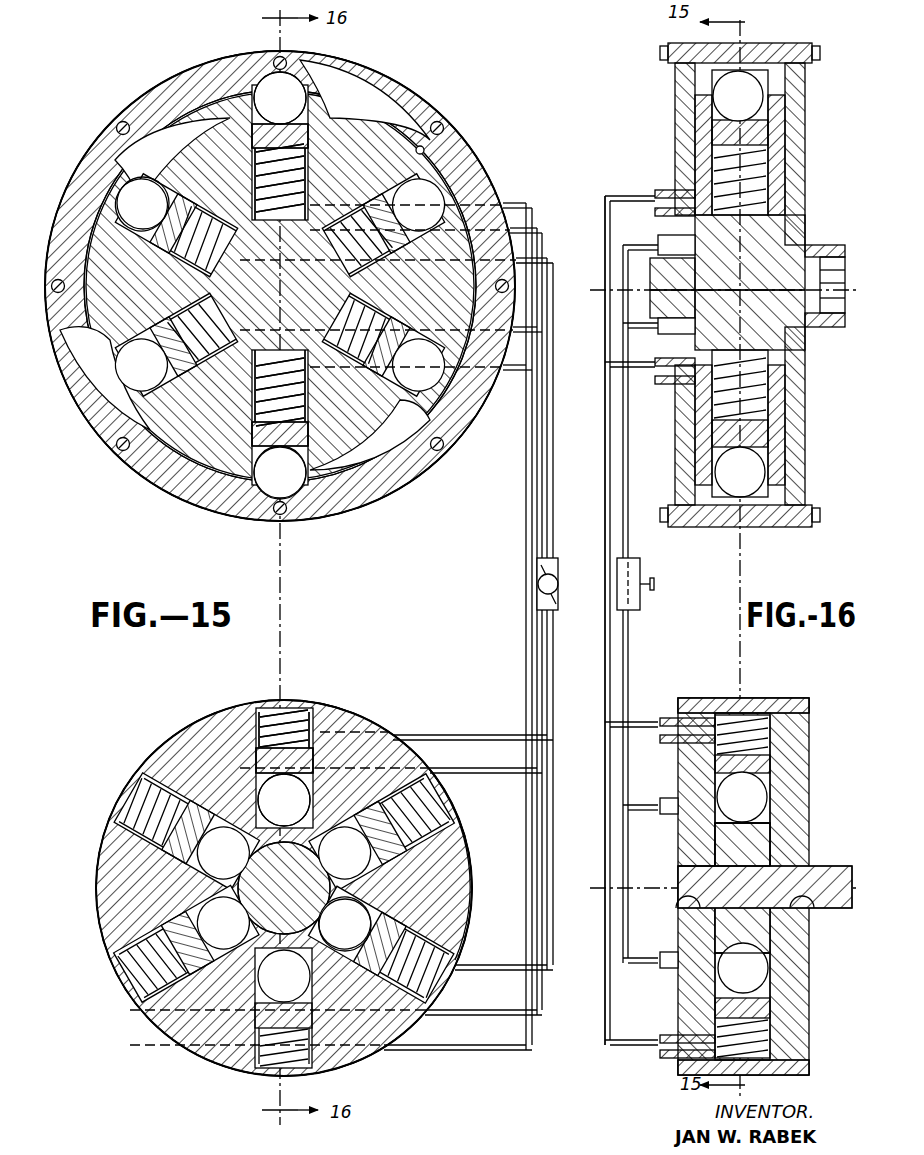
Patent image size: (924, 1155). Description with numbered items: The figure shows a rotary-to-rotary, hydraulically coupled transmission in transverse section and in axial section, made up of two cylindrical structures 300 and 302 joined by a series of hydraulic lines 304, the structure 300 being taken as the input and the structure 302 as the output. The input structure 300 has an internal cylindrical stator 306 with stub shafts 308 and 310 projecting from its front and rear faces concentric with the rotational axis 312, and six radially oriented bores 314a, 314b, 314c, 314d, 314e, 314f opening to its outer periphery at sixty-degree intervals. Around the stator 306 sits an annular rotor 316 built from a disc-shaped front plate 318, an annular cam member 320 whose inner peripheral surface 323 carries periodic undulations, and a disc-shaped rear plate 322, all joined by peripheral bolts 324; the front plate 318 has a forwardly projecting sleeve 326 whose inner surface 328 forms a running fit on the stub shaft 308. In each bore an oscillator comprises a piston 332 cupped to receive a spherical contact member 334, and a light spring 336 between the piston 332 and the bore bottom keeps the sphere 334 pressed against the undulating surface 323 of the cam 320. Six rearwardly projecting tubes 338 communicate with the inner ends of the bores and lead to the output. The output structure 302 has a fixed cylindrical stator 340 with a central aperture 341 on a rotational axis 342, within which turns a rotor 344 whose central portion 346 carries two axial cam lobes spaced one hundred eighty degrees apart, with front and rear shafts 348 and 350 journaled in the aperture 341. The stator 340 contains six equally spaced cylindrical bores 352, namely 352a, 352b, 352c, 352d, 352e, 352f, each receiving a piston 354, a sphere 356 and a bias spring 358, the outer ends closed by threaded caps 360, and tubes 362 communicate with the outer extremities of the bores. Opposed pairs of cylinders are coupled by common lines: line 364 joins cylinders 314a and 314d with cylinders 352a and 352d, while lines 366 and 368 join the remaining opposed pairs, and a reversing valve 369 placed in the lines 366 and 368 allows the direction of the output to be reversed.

In FIG. 15, the cylindrical structure 300 is at (275, 295).
In FIG. 16, the cylindrical structure 300 is at (706, 281).
In FIG. 15, the cylindrical structure 302 is at (290, 881).
In FIG. 16, the cylindrical structure 302 is at (745, 879).
In FIG. 15, the hydraulic lines 304 is at (491, 626).
In FIG. 16, the hydraulic lines 304 is at (642, 620).
In FIG. 15, the stator 306 is at (395, 118).
In FIG. 16, the stator 306 is at (770, 242).
In FIG. 16, the stub shaft 308 is at (800, 268).
In FIG. 16, the stub shaft 310 is at (660, 297).
In FIG. 16, the rotational axis 312 is at (606, 290).
In FIG. 15, the bore 314a is at (320, 64).
In FIG. 16, the bore 314a is at (762, 182).
In FIG. 15, the bore 314b is at (432, 186).
In FIG. 15, the bore 314c is at (446, 440).
In FIG. 15, the bore 314d is at (388, 480).
In FIG. 16, the bore 314d is at (780, 382).
In FIG. 15, the bore 314e is at (188, 496).
In FIG. 15, the bore 314f is at (100, 232).
In FIG. 15, the annular rotor 316 is at (472, 152).
In FIG. 16, the annular rotor 316 is at (676, 87).
In FIG. 16, the front plate 318 is at (805, 134).
In FIG. 15, the cam member 320 is at (385, 90).
In FIG. 16, the cam member 320 is at (762, 45).
In FIG. 16, the rear plate 322 is at (682, 114).
In FIG. 15, the inner peripheral surface 323 is at (428, 146).
In FIG. 15, the bolts 324 is at (442, 452).
In FIG. 16, the bolts 324 is at (668, 48).
In FIG. 16, the sleeve 326 is at (840, 310).
In FIG. 16, the inner surface 328 is at (842, 328).
In FIG. 15, the piston 332 is at (252, 136).
In FIG. 16, the piston 332 is at (722, 134).
In FIG. 15, the spherical contact member 334 is at (132, 192).
In FIG. 16, the spherical contact member 334 is at (754, 96).
In FIG. 15, the spring 336 is at (256, 152).
In FIG. 16, the spring 336 is at (722, 172).
In FIG. 16, the tubes 338 is at (665, 208).
In FIG. 15, the stator 340 is at (340, 722).
In FIG. 16, the stator 340 is at (809, 746).
In FIG. 16, the central aperture 341 is at (686, 900).
In FIG. 16, the rotational axis 342 is at (605, 904).
In FIG. 15, the rotor 344 is at (324, 882).
In FIG. 16, the rotor 344 is at (736, 878).
In FIG. 16, the central portion 346 is at (770, 842).
In FIG. 16, the front shaft 348 is at (822, 870).
In FIG. 16, the rear shaft 350 is at (684, 866).
In FIG. 15, the cylindrical bores 352 is at (130, 806).
In FIG. 15, the bore 352a is at (296, 714).
In FIG. 16, the bore 352a is at (722, 746).
In FIG. 15, the bore 352b is at (440, 846).
In FIG. 15, the bore 352c is at (440, 950).
In FIG. 15, the bore 352d is at (310, 1075).
In FIG. 16, the bore 352d is at (770, 1032).
In FIG. 15, the bore 352e is at (142, 930).
In FIG. 15, the bore 352f is at (120, 840).
In FIG. 15, the pistons 354 is at (262, 750).
In FIG. 16, the pistons 354 is at (770, 766).
In FIG. 15, the spheres 356 is at (262, 790).
In FIG. 16, the spheres 356 is at (756, 798).
In FIG. 15, the bias springs 358 is at (282, 716).
In FIG. 16, the bias springs 358 is at (770, 730).
In FIG. 15, the threaded caps 360 is at (426, 782).
In FIG. 16, the threaded caps 360 is at (746, 698).
In FIG. 16, the tubes 362 is at (678, 720).
In FIG. 15, the line 364 is at (528, 528).
In FIG. 16, the line 364 is at (605, 536).
In FIG. 15, the connecting line 366 is at (537, 628).
In FIG. 16, the connecting line 366 is at (630, 633).
In FIG. 15, the connecting line 368 is at (553, 628).
In FIG. 15, the reversing valve 369 is at (553, 566).
In FIG. 16, the reversing valve 369 is at (641, 564).